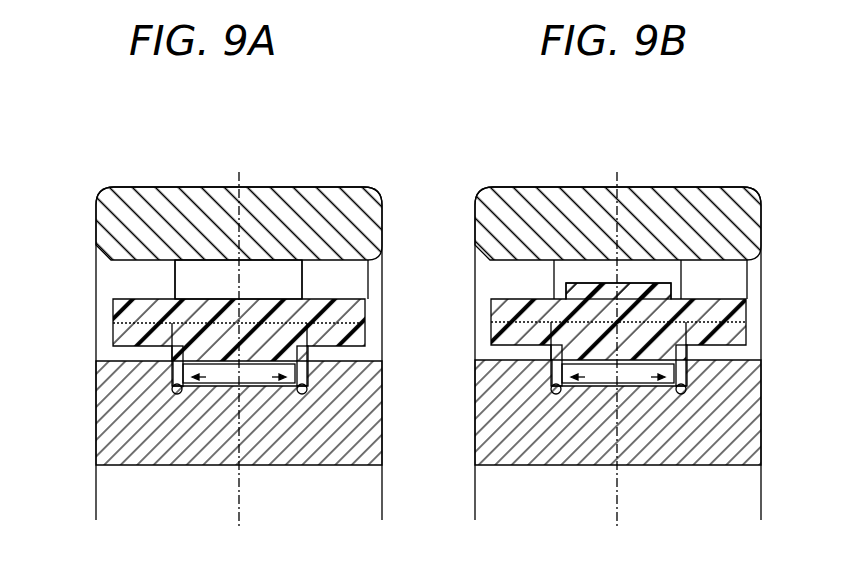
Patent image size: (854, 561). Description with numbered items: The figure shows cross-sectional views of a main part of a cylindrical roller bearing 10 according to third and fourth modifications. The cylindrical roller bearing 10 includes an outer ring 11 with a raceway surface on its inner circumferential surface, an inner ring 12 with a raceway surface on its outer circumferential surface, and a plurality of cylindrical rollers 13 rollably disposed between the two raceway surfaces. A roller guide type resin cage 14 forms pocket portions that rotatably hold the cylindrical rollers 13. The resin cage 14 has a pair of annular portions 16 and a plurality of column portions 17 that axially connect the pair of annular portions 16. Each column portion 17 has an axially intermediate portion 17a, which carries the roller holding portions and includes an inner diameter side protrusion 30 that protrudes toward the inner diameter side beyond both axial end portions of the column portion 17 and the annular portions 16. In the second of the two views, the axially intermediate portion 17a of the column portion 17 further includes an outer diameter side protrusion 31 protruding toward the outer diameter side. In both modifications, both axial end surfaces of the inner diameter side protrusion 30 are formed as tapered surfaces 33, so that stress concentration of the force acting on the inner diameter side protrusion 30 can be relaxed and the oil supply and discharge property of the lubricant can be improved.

In FIG. 9A, the cylindrical roller bearing 10 is at (314, 181).
In FIG. 9B, the cylindrical roller bearing 10 is at (618, 318).
In FIG. 9A, the outer ring 11 is at (372, 225).
In FIG. 9B, the outer ring 11 is at (642, 243).
In FIG. 9A, the inner ring 12 is at (372, 432).
In FIG. 9B, the inner ring 12 is at (642, 412).
In FIG. 9A, the cylindrical roller 13 is at (293, 280).
In FIG. 9B, the cylindrical roller 13 is at (740, 266).
In FIG. 9A, the resin cage 14 is at (372, 316).
In FIG. 9B, the resin cage 14 is at (650, 321).
In FIG. 9A, the annular portion 16 is at (113, 323).
In FIG. 9B, the annular portion 16 is at (619, 318).
In FIG. 9A, the column portion 17 is at (202, 292).
In FIG. 9B, the column portion 17 is at (614, 216).
In FIG. 9A, the axially intermediate portion 17a is at (184, 390).
In FIG. 9B, the axially intermediate portion 17a is at (619, 436).
In FIG. 9A, the inner diameter side protrusion 30 is at (257, 350).
In FIG. 9B, the inner diameter side protrusion 30 is at (621, 439).
In FIG. 9B, the outer diameter side protrusion 31 is at (617, 216).
In FIG. 9A, the tapered surface 33 is at (176, 394).
In FIG. 9B, the tapered surface 33 is at (625, 456).